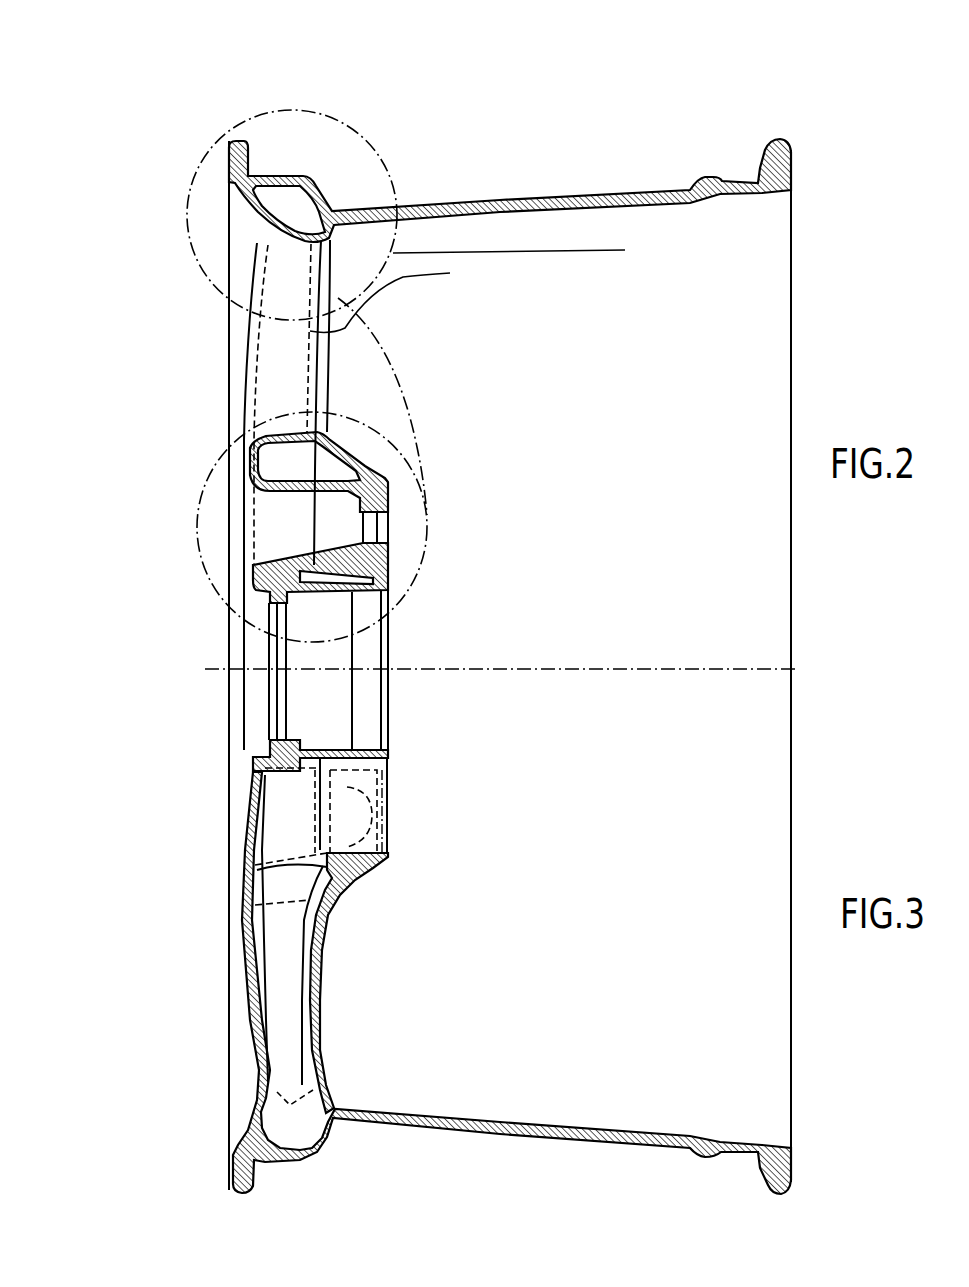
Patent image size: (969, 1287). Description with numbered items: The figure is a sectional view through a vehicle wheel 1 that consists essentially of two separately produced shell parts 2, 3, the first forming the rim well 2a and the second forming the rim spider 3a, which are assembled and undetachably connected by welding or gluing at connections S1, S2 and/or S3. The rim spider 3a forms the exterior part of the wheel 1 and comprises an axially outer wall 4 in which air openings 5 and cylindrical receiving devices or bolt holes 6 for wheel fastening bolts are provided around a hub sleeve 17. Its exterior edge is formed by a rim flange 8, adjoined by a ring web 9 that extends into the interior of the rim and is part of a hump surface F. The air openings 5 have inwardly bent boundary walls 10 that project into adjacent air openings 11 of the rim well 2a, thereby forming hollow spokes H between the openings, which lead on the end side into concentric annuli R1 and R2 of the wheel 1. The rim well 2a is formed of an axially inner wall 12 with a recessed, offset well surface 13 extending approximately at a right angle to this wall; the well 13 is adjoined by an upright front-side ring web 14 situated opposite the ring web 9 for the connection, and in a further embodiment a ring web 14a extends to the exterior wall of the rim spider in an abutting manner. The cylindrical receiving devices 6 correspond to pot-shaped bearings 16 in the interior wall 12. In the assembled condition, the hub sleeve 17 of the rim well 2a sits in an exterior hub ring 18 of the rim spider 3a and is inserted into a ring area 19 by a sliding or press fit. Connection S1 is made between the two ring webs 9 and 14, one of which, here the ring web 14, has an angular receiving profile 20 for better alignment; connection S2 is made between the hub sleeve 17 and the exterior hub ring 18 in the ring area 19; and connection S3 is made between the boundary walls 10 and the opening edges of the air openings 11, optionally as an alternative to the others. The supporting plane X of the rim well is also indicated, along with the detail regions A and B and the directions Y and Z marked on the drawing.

In FIG. 2, the wheel 1 is at (470, 104).
In FIG. 2, the shell part 2 is at (623, 186).
In FIG. 2, the rim well 2a is at (400, 210).
In FIG. 3, the shell part 3 is at (240, 893).
In FIG. 3, the rim spider 3a is at (243, 803).
In FIG. 3, the axially outer wall 4 is at (243, 960).
In FIG. 2, the air openings 5 is at (270, 343).
In FIG. 2, the cylindrical receiving devices 6 is at (268, 510).
In FIG. 2, the rim flange 8 is at (229, 142).
In FIG. 2, the ring web 9 is at (247, 190).
In FIG. 2, the boundary walls 10 is at (262, 241).
In FIG. 3, the boundary walls 10 is at (320, 1090).
In FIG. 2, the air openings 11 is at (343, 330).
In FIG. 3, the axially inner wall 12 is at (322, 940).
In FIG. 2, the well surface 13 is at (491, 192).
In FIG. 2, the ring web 14 is at (318, 180).
In FIG. 2, the ring web 14a is at (336, 182).
In FIG. 2, the pot-shaped bearings 16 is at (391, 575).
In FIG. 2, the hub sleeve 17 is at (390, 594).
In FIG. 2, the exterior hub ring 18 is at (266, 580).
In FIG. 2, the ring area 19 is at (290, 607).
In FIG. 2, the angular receiving profile 20 is at (302, 198).
In FIG. 2, the detail region A is at (268, 110).
In FIG. 2, the detail region B is at (217, 457).
In FIG. 2, the hump surface F is at (274, 178).
In FIG. 3, the hollow spokes H is at (290, 1003).
In FIG. 2, the annulus R1 is at (273, 208).
In FIG. 3, the annulus R1 is at (293, 1122).
In FIG. 2, the annulus R2 is at (287, 456).
In FIG. 2, the connection S1 is at (305, 178).
In FIG. 2, the connection S2 is at (240, 618).
In FIG. 2, the connection S3 is at (329, 238).
In FIG. 2, the supporting plane X is at (482, 523).
In FIG. 2, the direction Y is at (118, 385).
In FIG. 2, the direction Z is at (392, 497).